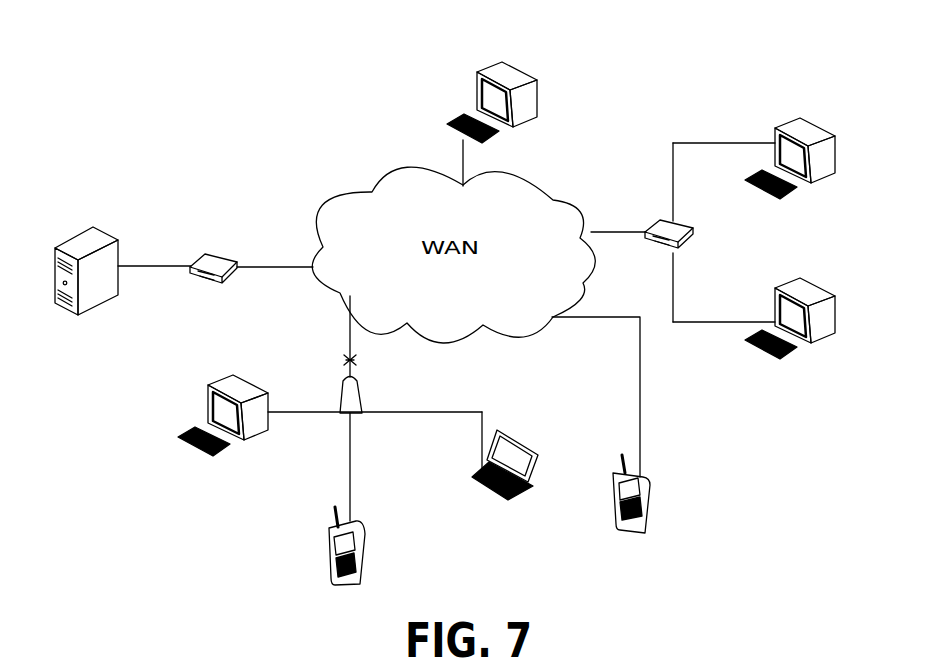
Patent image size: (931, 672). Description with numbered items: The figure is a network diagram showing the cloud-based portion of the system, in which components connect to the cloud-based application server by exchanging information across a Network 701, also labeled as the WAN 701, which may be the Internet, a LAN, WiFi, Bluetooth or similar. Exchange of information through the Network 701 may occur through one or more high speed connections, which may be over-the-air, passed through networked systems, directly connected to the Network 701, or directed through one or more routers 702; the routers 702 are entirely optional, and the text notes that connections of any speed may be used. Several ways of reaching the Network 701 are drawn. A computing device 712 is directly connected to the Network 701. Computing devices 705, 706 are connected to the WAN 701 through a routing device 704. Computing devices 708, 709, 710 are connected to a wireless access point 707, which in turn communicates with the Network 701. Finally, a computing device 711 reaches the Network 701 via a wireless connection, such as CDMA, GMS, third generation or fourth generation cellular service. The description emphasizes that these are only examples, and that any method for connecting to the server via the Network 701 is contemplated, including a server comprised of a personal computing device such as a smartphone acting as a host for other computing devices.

The Network 701 is at (84, 247).
The router 702 is at (212, 241).
The routing device 704 is at (660, 208).
The computing device 705 is at (790, 133).
The computing device 706 is at (790, 298).
The wireless access point 707 is at (343, 414).
The computing device 708 is at (223, 391).
The computing device 709 is at (367, 552).
The computing device 710 is at (505, 444).
The computing device 711 is at (653, 502).
The computing device 712 is at (492, 76).